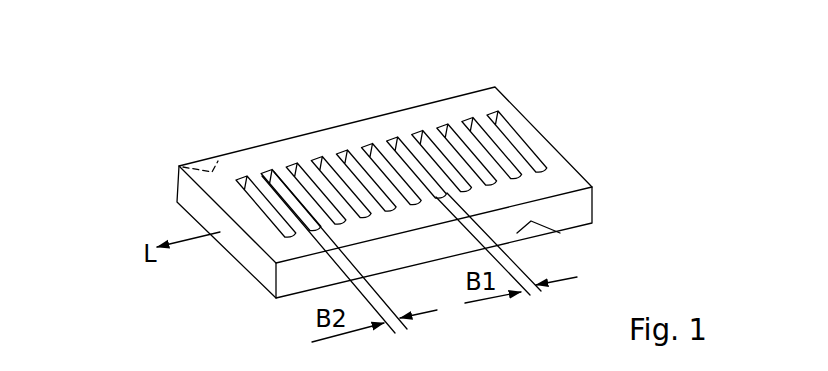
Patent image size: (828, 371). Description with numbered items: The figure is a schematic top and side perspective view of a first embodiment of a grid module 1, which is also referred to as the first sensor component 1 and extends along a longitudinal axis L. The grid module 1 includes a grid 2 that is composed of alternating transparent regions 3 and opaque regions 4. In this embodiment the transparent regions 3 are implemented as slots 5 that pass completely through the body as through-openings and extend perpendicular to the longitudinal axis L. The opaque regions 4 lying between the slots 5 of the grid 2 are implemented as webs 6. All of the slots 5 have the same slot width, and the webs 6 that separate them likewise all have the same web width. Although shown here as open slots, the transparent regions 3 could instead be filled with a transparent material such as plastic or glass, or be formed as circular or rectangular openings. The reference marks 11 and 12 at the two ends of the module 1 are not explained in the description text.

The grid module 1 is at (362, 153).
The grid 2 is at (402, 112).
The transparent regions 3 is at (255, 198).
The opaque regions 4 is at (333, 171).
The slots 5 is at (387, 180).
The webs 6 is at (500, 147).
The first end 11 is at (180, 167).
The second end 12 is at (560, 233).